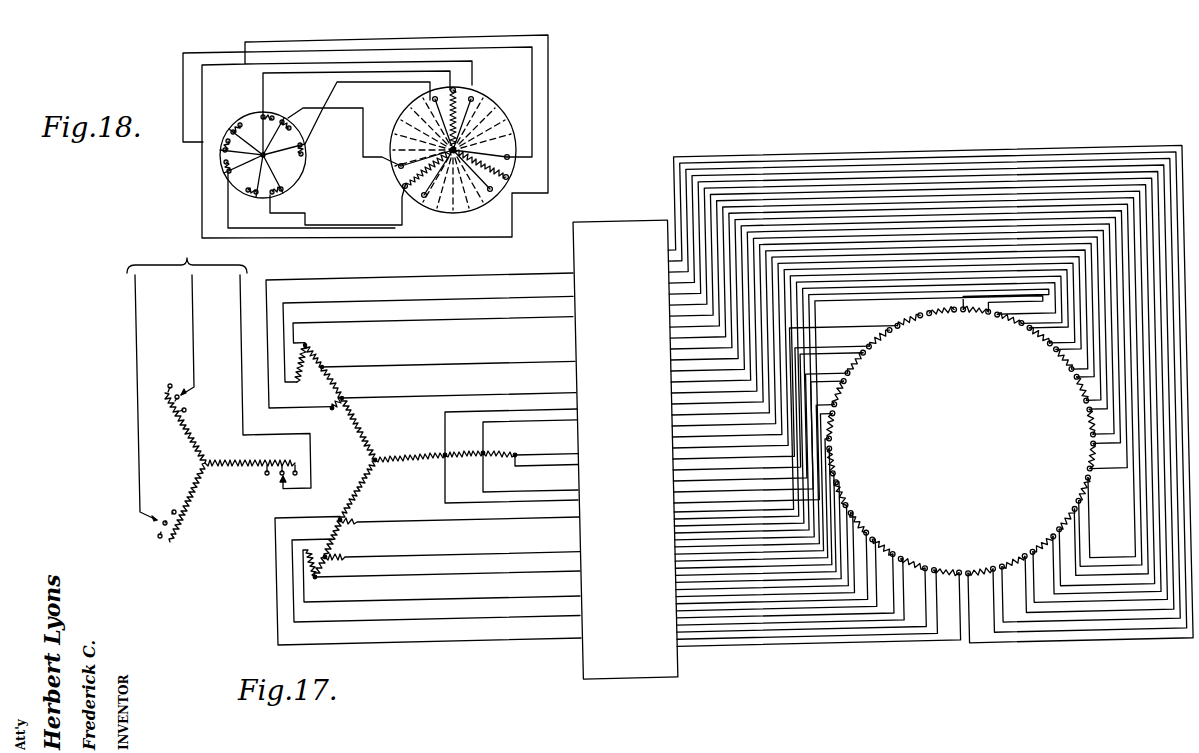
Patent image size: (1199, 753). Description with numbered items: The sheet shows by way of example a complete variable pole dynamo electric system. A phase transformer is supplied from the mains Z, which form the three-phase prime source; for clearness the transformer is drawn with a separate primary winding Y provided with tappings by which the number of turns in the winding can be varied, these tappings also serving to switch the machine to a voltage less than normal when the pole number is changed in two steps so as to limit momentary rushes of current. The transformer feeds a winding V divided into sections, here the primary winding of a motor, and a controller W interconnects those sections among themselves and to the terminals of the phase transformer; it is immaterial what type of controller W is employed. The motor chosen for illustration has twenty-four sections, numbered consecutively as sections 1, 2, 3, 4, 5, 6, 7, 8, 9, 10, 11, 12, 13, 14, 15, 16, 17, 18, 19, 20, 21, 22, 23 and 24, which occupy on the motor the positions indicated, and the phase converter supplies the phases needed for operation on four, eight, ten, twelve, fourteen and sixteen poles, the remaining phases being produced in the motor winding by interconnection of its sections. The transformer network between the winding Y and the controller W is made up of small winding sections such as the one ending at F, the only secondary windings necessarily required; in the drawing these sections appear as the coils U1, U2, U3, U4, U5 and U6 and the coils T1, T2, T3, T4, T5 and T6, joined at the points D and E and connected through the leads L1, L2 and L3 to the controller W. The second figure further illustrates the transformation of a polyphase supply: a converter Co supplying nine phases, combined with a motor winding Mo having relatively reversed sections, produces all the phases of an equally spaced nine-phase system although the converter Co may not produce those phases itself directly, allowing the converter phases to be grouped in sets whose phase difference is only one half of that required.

In FIG. 17, the motor winding section 1 is at (946, 560).
In FIG. 17, the motor winding section 2 is at (913, 554).
In FIG. 17, the motor winding section 3 is at (885, 540).
In FIG. 17, the motor winding section 4 is at (863, 519).
In FIG. 17, the motor winding section 5 is at (849, 493).
In FIG. 17, the motor winding section 6 is at (841, 460).
In FIG. 17, the motor winding section 7 is at (840, 425).
In FIG. 17, the motor winding section 8 is at (846, 393).
In FIG. 17, the motor winding section 9 is at (861, 366).
In FIG. 17, the motor winding section 10 is at (883, 344).
In FIG. 17, the motor winding section 11 is at (910, 330).
In FIG. 17, the motor winding section 12 is at (942, 323).
In FIG. 17, the motor winding section 13 is at (976, 322).
In FIG. 17, the motor winding section 14 is at (1008, 328).
In FIG. 17, the motor winding section 15 is at (1035, 342).
In FIG. 17, the motor winding section 16 is at (1056, 362).
In FIG. 17, the motor winding section 17 is at (1072, 389).
In FIG. 17, the motor winding section 18 is at (1078, 422).
In FIG. 17, the motor winding section 19 is at (1079, 456).
In FIG. 17, the motor winding section 20 is at (1073, 489).
In FIG. 17, the motor winding section 21 is at (1059, 516).
In FIG. 17, the motor winding section 22 is at (1039, 537).
In FIG. 17, the motor winding section 23 is at (1011, 552).
In FIG. 17, the motor winding section 24 is at (980, 560).
In FIG. 17, the winding V is at (929, 397).
In FIG. 17, the controller W is at (625, 449).
In FIG. 17, the primary winding Y is at (227, 463).
In FIG. 17, the mains Z is at (219, 377).
In FIG. 17, the connection point D is at (530, 446).
In FIG. 17, the connection point E is at (438, 573).
In FIG. 17, the secondary winding section terminal F is at (419, 340).
In FIG. 17, the lead L1 is at (546, 471).
In FIG. 17, the lead L2 is at (446, 569).
In FIG. 17, the lead L3 is at (447, 356).
In FIG. 17, the transformer coil T1 is at (520, 473).
In FIG. 17, the transformer coil T2 is at (451, 563).
In FIG. 17, the transformer coil T3 is at (436, 571).
In FIG. 17, the transformer coil T4 is at (323, 397).
In FIG. 17, the transformer coil T5 is at (338, 382).
In FIG. 17, the transformer coil T6 is at (510, 433).
In FIG. 17, the winding section U1 is at (499, 479).
In FIG. 17, the winding section U2 is at (459, 531).
In FIG. 17, the winding section U3 is at (428, 552).
In FIG. 17, the winding section U4 is at (450, 412).
In FIG. 17, the winding section U5 is at (358, 429).
In FIG. 17, the winding section U6 is at (409, 448).
In FIG. 18, the motor winding Mo is at (263, 155).
In FIG. 18, the converter Co is at (453, 150).